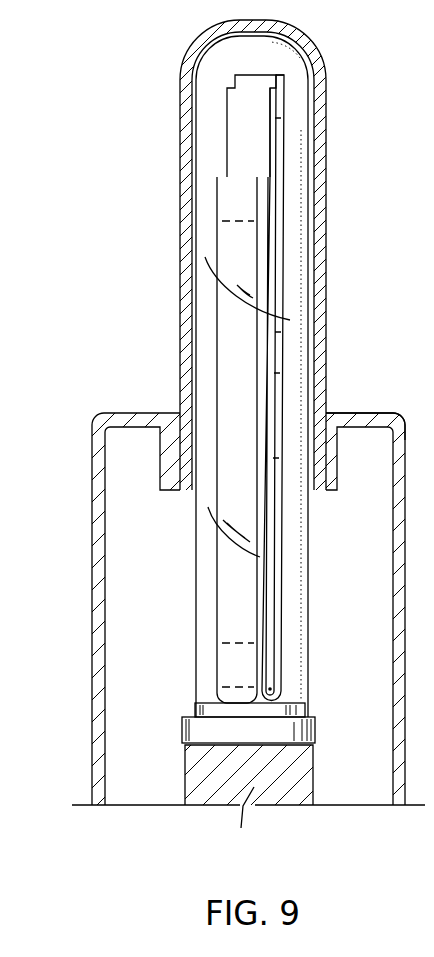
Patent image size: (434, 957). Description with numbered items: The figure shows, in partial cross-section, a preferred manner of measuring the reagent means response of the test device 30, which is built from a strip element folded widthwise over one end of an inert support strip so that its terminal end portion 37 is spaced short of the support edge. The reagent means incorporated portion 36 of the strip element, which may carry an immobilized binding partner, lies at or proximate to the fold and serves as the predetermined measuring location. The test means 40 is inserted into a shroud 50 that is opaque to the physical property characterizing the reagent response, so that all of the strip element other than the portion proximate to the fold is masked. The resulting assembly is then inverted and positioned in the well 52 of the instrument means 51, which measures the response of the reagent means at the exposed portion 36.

The test device 30 is at (288, 179).
The reagent means incorporated portion 36 is at (232, 664).
The terminal end portion 37 is at (230, 197).
The test means 40 is at (310, 150).
The shroud 50 is at (321, 315).
The instrument means 51 is at (91, 577).
The well 52 is at (348, 413).